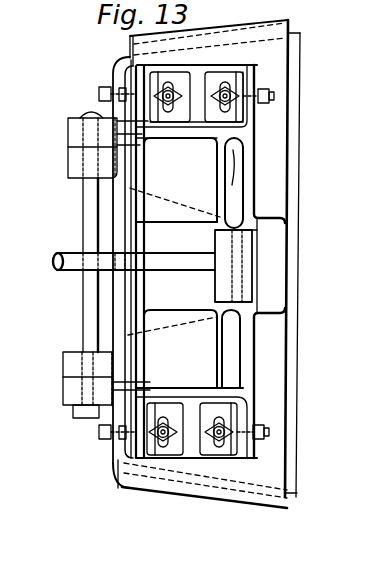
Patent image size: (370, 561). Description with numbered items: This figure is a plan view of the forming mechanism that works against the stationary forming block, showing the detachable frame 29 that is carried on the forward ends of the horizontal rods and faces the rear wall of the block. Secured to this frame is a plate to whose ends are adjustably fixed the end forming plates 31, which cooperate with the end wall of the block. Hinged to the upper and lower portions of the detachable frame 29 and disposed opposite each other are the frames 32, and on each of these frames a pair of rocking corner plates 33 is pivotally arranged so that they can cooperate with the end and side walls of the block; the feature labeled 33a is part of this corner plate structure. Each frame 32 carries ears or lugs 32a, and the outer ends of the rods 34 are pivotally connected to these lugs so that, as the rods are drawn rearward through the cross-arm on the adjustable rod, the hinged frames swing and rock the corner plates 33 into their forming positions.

The detachable frame 29 is at (118, 216).
The end forming plates 31 is at (110, 80).
The frames 32 is at (228, 183).
The ears or lugs 32a is at (243, 290).
The rocking corner plates 33 is at (300, 34).
The plate corner 33a is at (128, 490).
The rods 34 is at (80, 271).